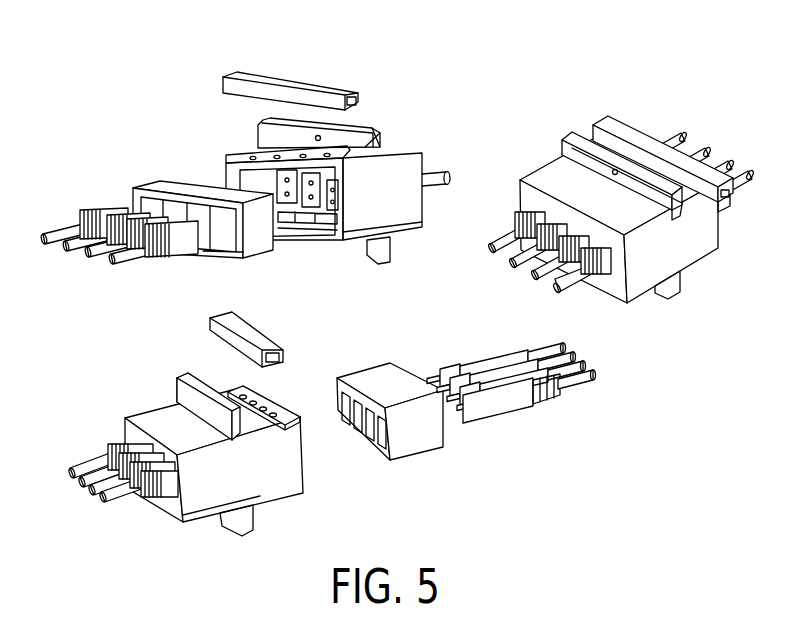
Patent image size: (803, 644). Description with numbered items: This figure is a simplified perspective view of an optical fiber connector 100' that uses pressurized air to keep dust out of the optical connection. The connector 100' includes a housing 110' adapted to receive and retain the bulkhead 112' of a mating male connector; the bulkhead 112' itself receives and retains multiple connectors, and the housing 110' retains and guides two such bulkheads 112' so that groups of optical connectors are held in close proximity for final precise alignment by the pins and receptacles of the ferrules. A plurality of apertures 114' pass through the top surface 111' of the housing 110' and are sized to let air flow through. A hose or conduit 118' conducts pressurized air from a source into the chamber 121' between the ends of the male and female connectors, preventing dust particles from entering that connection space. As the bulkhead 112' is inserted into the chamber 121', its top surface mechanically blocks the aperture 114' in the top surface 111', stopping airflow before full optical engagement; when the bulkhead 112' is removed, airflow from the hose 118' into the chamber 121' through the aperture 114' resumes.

The connector 100' is at (609, 154).
The housing 110' is at (264, 271).
The top surface 111' is at (268, 287).
The bulkhead 112' is at (282, 286).
The apertures 114' is at (339, 278).
The hose or conduit 118' is at (284, 188).
The chamber 121' is at (313, 255).